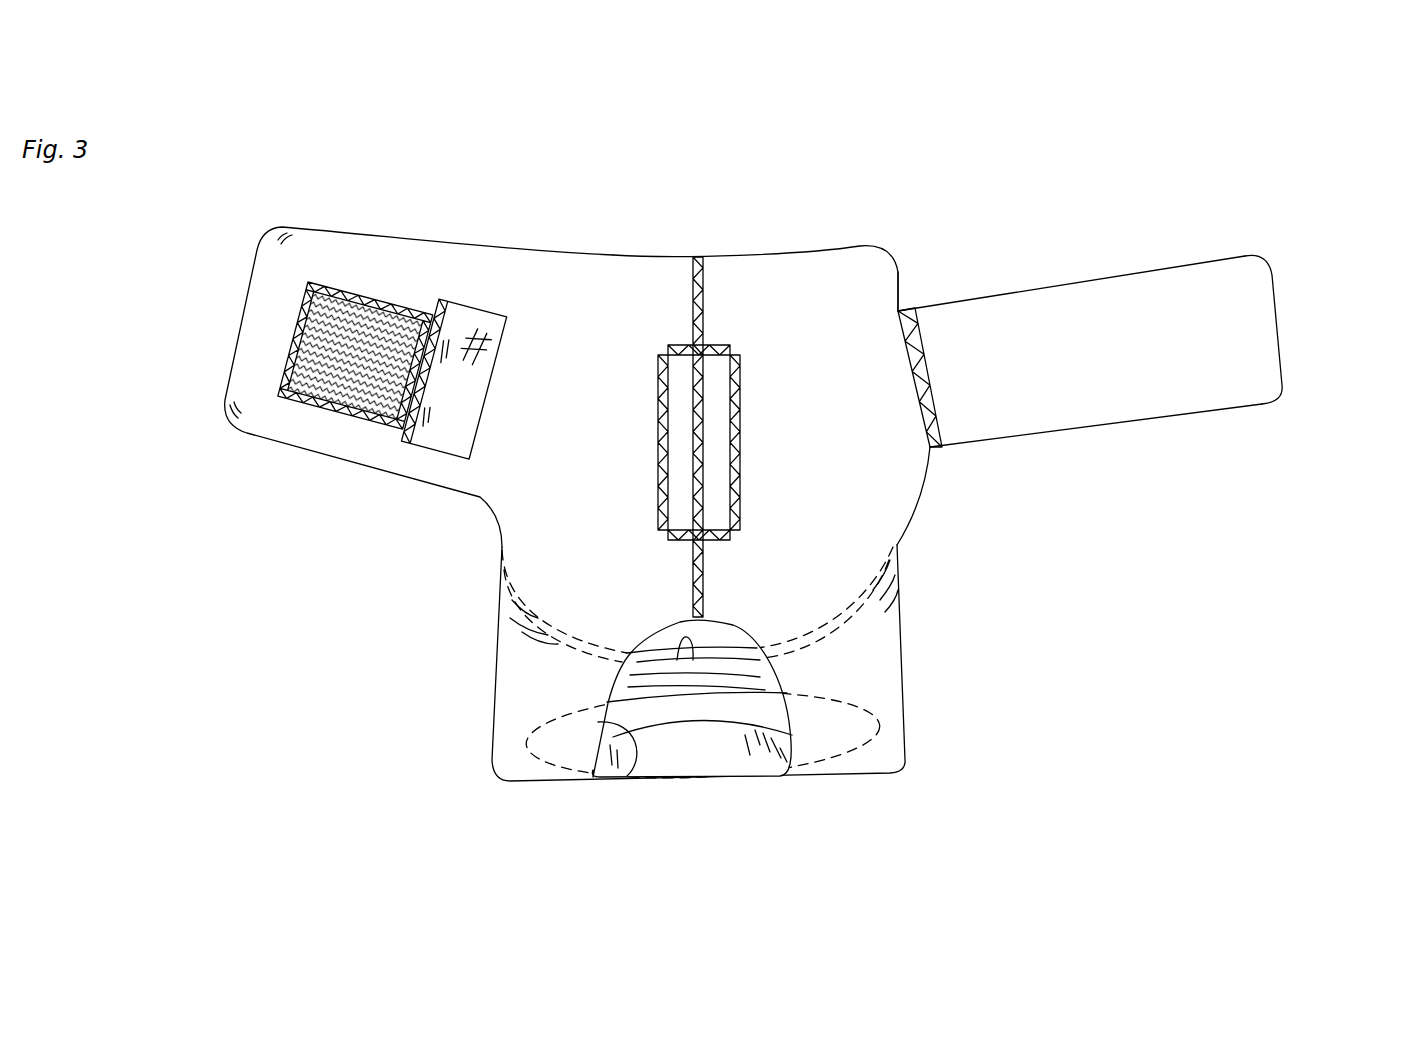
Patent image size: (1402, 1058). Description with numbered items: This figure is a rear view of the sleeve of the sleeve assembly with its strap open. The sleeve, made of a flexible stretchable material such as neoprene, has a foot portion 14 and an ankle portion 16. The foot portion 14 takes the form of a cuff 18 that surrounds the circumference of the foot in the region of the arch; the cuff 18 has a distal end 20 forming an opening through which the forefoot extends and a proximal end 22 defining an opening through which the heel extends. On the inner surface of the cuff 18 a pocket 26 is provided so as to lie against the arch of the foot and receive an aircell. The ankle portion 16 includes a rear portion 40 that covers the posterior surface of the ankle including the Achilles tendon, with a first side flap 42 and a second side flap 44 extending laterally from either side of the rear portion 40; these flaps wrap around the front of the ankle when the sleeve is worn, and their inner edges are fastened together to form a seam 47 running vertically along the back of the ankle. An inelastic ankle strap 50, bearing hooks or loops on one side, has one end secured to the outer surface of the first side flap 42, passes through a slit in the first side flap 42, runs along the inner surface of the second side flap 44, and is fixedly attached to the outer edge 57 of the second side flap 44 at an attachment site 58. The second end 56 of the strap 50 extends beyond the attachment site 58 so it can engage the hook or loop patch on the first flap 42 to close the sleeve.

The foot portion 14 is at (1098, 593).
The ankle portion 16 is at (930, 360).
The cuff 18 is at (687, 640).
The distal end 20 is at (698, 723).
The proximal end 22 is at (637, 747).
The pocket 26 is at (735, 728).
The rear portion 40 is at (798, 351).
The first side flap 42 is at (310, 440).
The second side flap 44 is at (910, 495).
The seam 47 is at (705, 315).
The ankle strap 50 is at (470, 327).
The second end 56 is at (1273, 310).
The outer edge 57 is at (900, 277).
The attachment site 58 is at (930, 447).